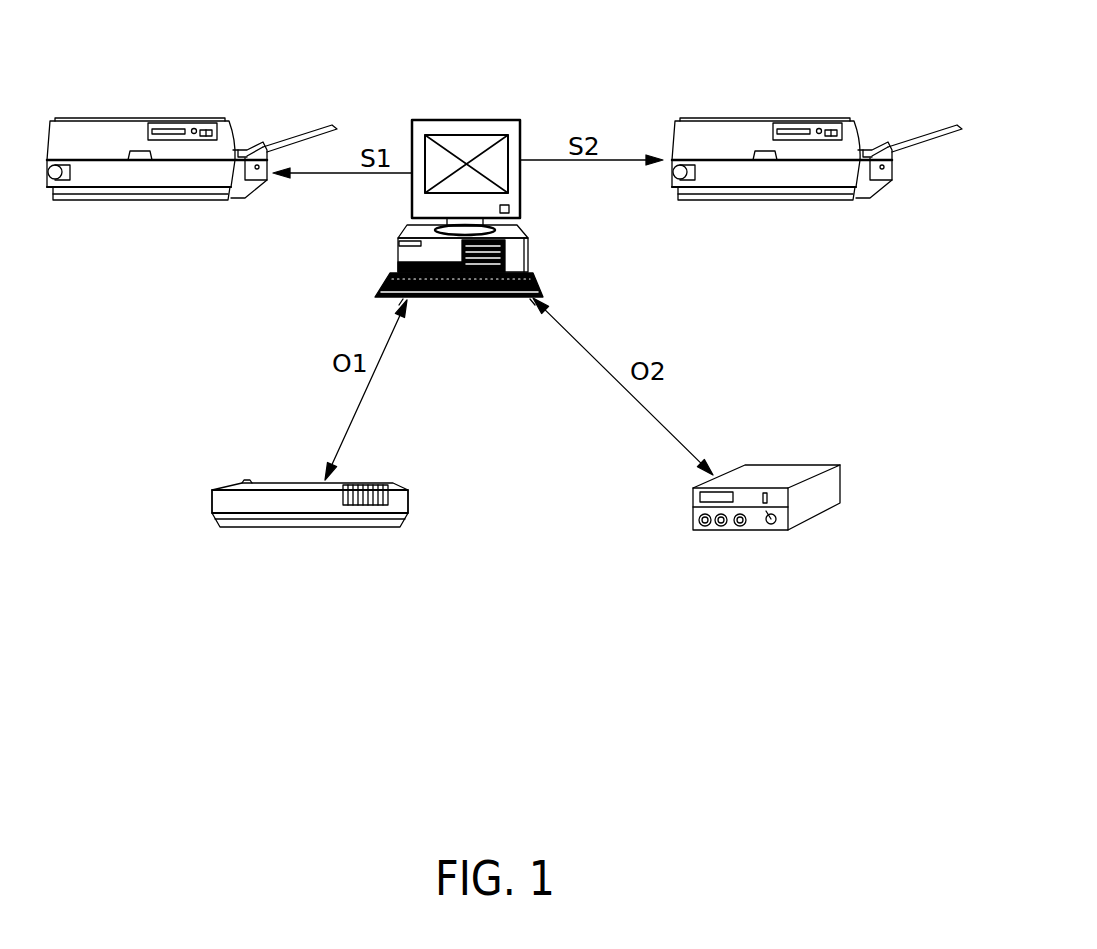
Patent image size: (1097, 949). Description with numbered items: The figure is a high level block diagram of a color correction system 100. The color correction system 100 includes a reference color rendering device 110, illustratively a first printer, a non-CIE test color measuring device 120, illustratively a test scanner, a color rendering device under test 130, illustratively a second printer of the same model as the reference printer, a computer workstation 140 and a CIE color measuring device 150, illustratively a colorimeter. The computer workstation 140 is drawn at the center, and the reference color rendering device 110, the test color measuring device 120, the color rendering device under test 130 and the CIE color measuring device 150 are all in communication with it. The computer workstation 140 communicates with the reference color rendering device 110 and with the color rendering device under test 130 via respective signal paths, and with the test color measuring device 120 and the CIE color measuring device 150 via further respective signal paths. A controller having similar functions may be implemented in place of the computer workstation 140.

The color correction system 100 is at (862, 700).
The reference color rendering device 110 is at (112, 200).
The non-CIE test color measuring device 120 is at (282, 482).
The color rendering device under test 130 is at (773, 203).
The computer workstation 140 is at (473, 118).
The CIE color measuring device 150 is at (783, 465).